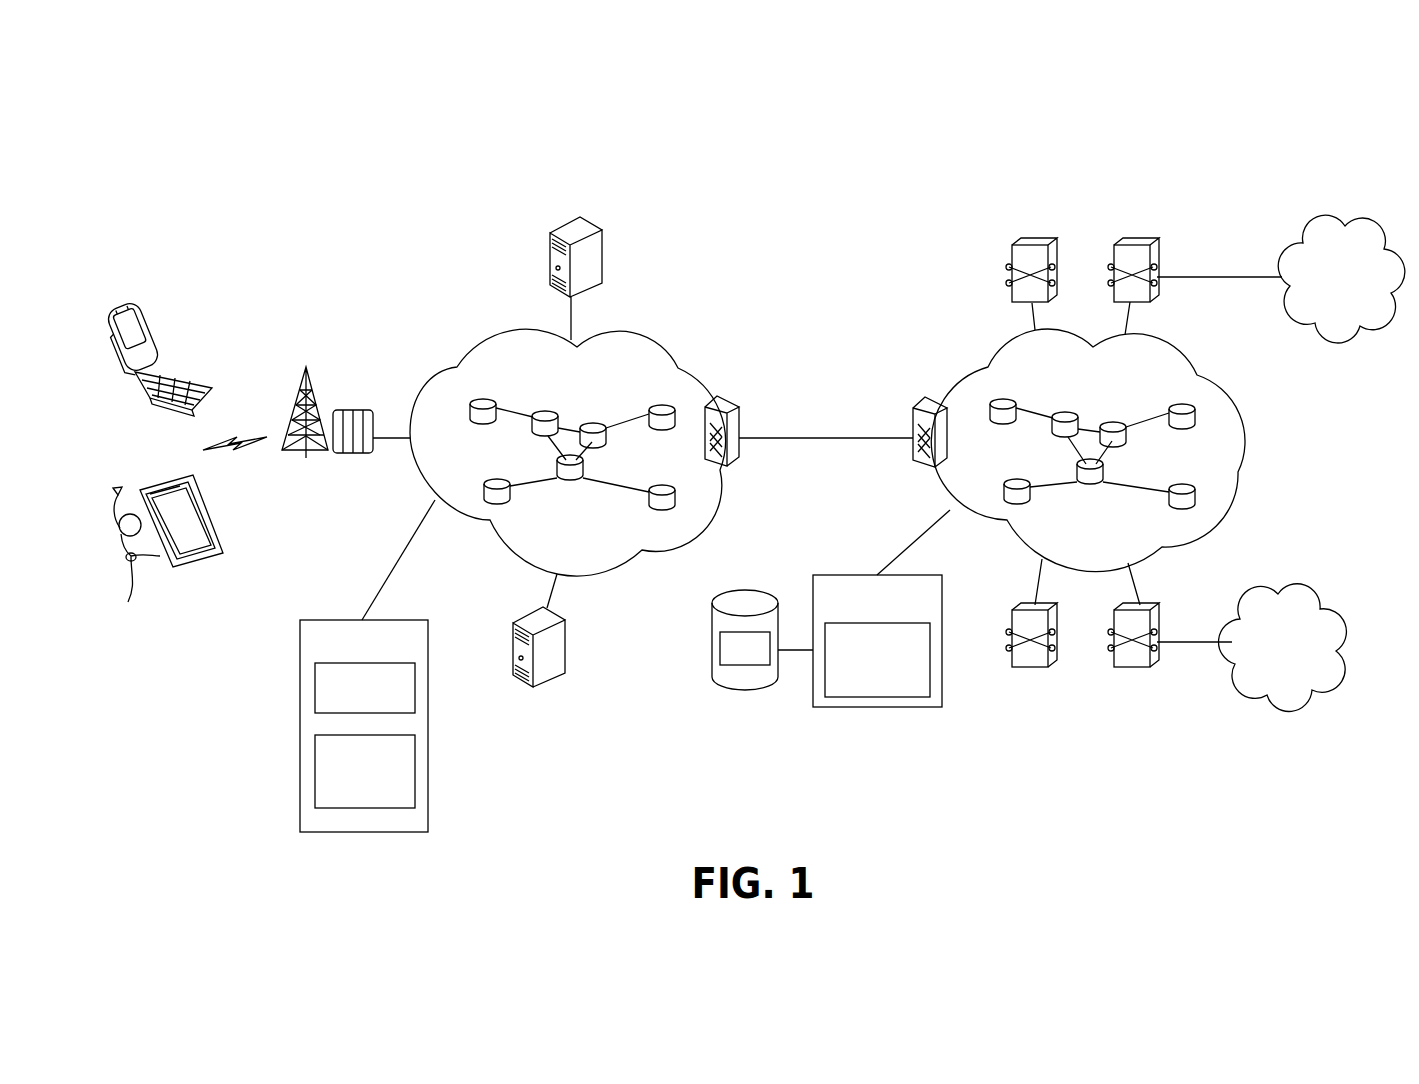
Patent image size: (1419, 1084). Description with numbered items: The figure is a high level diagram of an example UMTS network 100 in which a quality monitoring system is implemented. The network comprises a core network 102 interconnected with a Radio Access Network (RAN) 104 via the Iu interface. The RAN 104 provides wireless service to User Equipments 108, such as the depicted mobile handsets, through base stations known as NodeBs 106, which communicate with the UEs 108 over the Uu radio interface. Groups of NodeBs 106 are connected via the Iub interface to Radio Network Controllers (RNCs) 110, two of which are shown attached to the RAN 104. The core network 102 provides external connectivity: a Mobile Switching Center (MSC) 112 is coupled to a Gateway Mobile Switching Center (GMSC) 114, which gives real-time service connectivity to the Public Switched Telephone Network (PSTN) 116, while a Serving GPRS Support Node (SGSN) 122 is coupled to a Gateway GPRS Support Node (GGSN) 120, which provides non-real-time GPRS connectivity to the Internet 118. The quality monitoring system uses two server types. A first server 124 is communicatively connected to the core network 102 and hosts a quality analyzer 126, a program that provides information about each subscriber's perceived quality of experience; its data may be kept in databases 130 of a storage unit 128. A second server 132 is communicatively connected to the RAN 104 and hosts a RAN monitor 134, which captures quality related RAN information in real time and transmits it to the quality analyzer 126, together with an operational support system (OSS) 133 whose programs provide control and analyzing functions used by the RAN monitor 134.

The UMTS network 100 is at (845, 180).
The core network 102 is at (956, 376).
The Radio Access Network (RAN) 104 is at (442, 372).
The NodeB 106 is at (312, 395).
The User Equipment (UE) 108 is at (150, 320).
The Radio Network Controller (RNC) 110 is at (550, 234).
The Mobile Switching Center (MSC) 112 is at (1005, 668).
The Gateway Mobile Switching Center (GMSC) 114 is at (1110, 668).
The Public Switched Telephone Network (PSTN) 116 is at (1270, 704).
The Internet 118 is at (1318, 222).
The Gateway GPRS Support Node (GGSN) 120 is at (1162, 252).
The Serving GPRS Support Node (SGSN) 122 is at (1008, 250).
The first server 124 is at (877, 638).
The quality analyzer 126 is at (858, 707).
The storage unit 128 is at (749, 692).
The database 130 is at (735, 667).
The second server 132 is at (373, 745).
The operational support system (OSS) 133 is at (415, 713).
The RAN monitor 134 is at (415, 803).